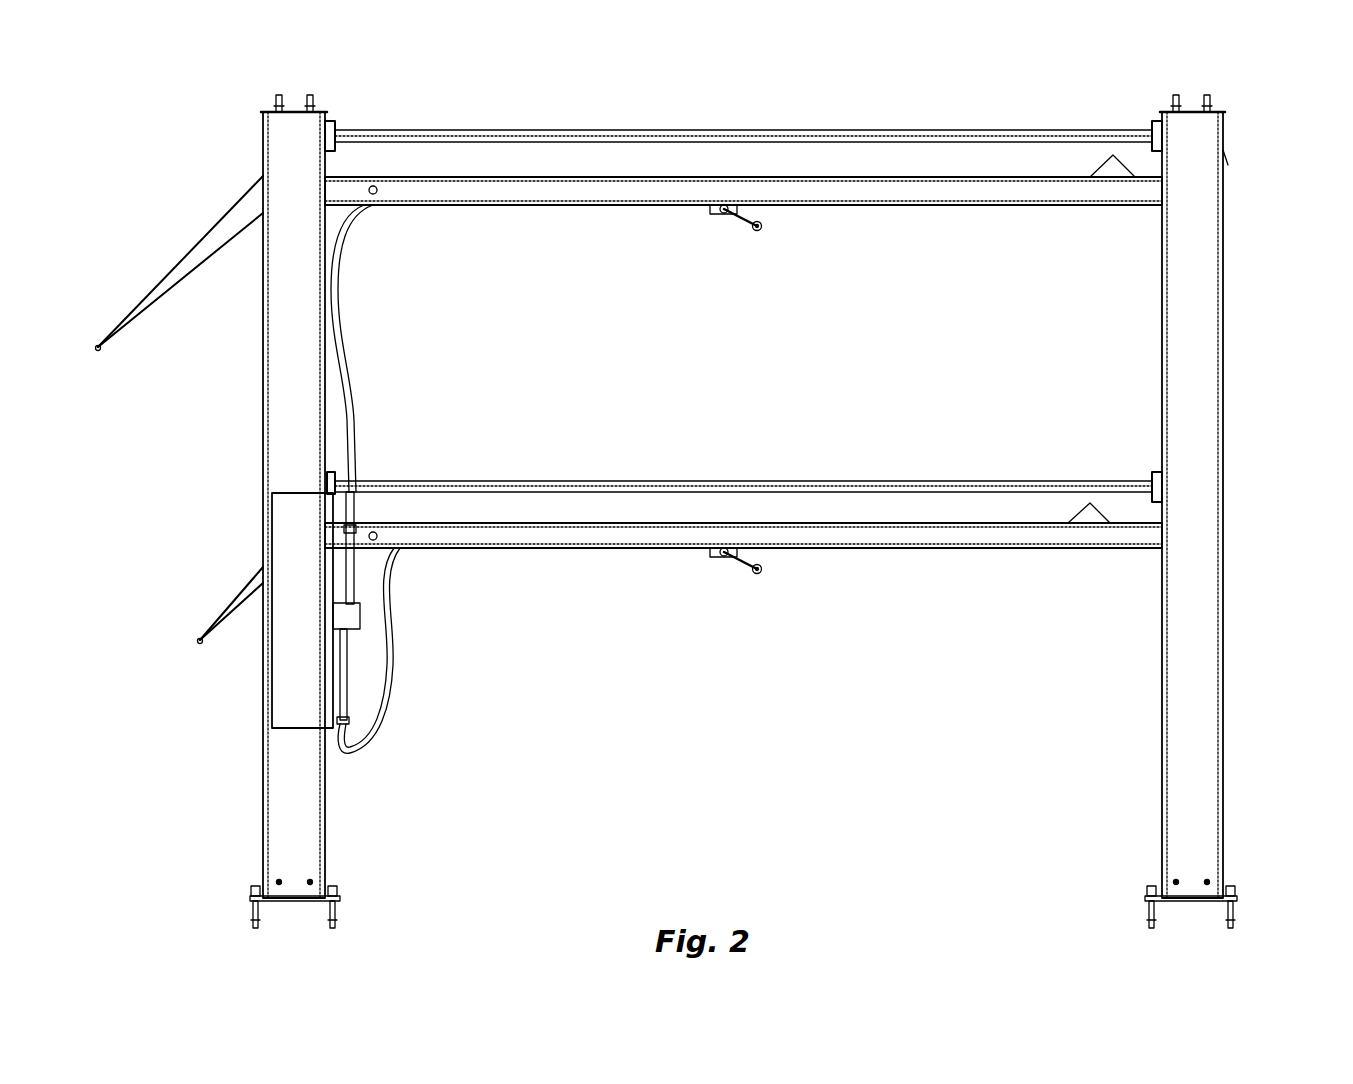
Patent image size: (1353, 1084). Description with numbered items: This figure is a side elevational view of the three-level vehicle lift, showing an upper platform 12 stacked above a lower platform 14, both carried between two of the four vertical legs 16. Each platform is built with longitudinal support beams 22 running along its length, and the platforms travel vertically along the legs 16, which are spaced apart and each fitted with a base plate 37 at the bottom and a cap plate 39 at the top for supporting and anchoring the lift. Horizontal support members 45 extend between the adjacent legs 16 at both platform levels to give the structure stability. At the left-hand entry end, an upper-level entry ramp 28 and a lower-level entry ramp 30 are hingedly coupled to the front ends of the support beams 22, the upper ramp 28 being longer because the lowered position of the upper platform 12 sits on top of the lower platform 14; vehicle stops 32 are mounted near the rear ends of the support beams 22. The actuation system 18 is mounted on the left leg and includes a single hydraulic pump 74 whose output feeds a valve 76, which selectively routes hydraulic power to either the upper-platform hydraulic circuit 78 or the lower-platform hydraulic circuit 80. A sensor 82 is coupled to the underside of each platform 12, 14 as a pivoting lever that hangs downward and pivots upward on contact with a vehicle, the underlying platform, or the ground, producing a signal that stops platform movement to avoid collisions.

The upper platform 12 is at (950, 177).
The lower platform 14 is at (858, 523).
The leg 16 is at (262, 358).
The actuation system 18 is at (412, 599).
The longitudinal support beam 22 is at (1022, 190).
The upper-level entry ramp 28 is at (146, 298).
The lower-level entry ramp 30 is at (226, 605).
The vehicle stop 32 is at (1124, 153).
The base plate 37 is at (255, 892).
The cap plate 39 is at (1215, 112).
The support member 45 is at (600, 130).
The hydraulic pump 74 is at (272, 693).
The valve 76 is at (342, 612).
The upper-platform hydraulic circuit 78 is at (356, 432).
The lower-platform hydraulic circuit 80 is at (393, 712).
The sensor 82 is at (718, 214).